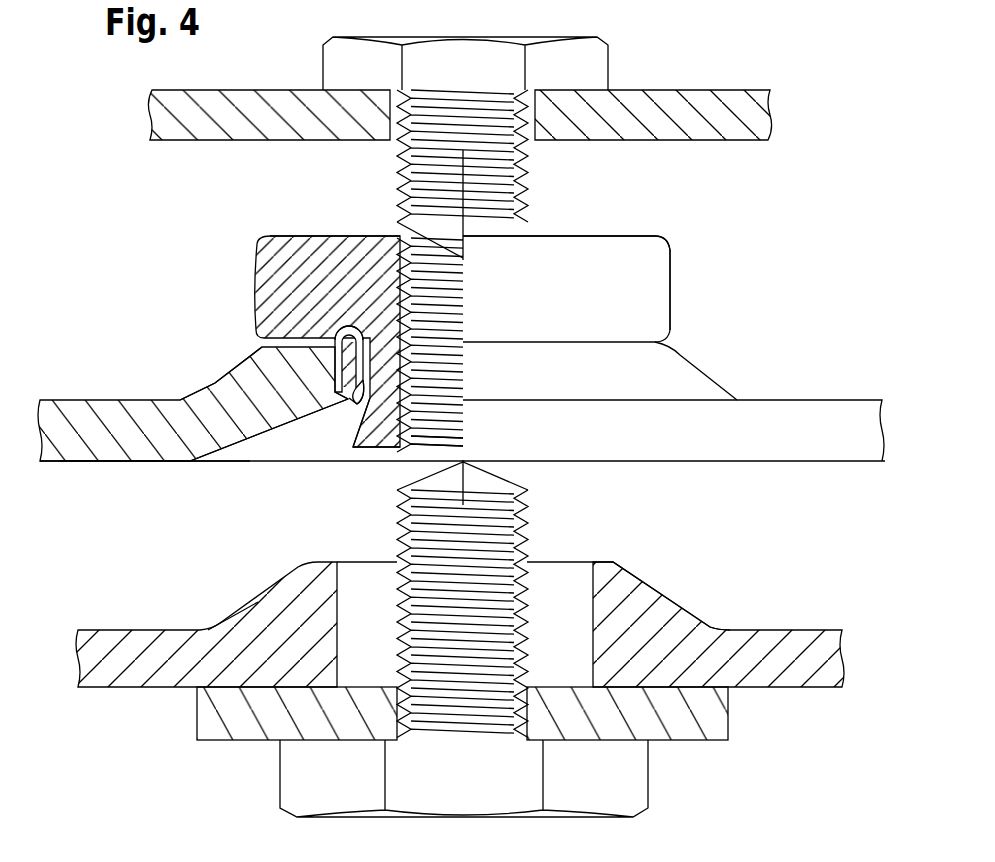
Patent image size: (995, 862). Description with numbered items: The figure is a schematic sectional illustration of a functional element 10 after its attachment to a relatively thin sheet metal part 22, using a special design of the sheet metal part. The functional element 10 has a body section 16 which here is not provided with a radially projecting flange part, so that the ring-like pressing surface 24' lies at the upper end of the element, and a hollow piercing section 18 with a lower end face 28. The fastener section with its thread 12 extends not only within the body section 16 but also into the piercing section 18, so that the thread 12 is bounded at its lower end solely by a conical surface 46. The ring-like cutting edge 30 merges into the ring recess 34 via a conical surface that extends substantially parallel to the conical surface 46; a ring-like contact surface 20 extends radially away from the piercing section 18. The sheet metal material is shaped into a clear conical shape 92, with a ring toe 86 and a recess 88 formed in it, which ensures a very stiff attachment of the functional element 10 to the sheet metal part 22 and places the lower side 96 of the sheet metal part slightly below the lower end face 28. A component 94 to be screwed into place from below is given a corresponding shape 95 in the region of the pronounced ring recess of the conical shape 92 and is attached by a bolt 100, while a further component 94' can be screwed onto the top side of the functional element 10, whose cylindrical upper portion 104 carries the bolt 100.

The functional element 10 is at (672, 270).
The fastener section 12 is at (447, 318).
The body section 16 is at (268, 272).
The piercing section 18 is at (384, 412).
The ring-like contact surface 20 is at (283, 348).
The sheet metal part 22 is at (90, 410).
The ring-like pressing surface 24' is at (309, 197).
The lower end face 28 is at (376, 418).
The ring-like cutting edge 30 is at (360, 445).
The ring recess 34 is at (347, 443).
The conical surface 46 is at (397, 437).
The ring toe 86 is at (320, 413).
The recess 88 is at (325, 392).
The conical shape 92 is at (225, 383).
The component 94 is at (464, 624).
The component 94' is at (474, 145).
The embossment of plate 95 is at (648, 598).
The lower side of the sheet metal part 96 is at (128, 462).
The bolt 100 is at (600, 62).
The cylindrical portion of fastening element 104 is at (562, 236).